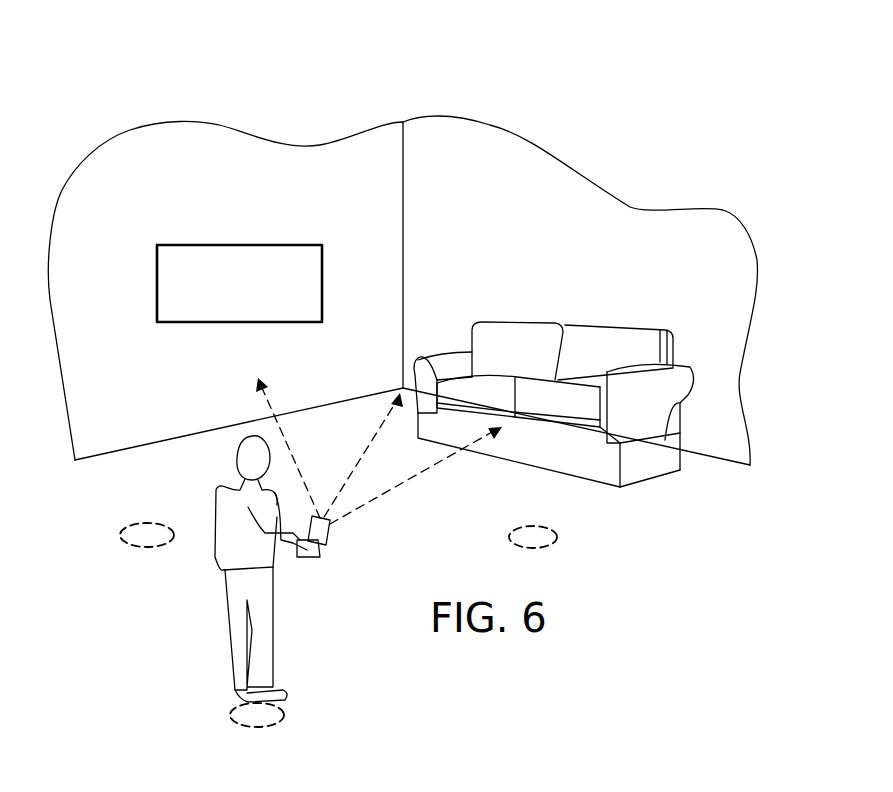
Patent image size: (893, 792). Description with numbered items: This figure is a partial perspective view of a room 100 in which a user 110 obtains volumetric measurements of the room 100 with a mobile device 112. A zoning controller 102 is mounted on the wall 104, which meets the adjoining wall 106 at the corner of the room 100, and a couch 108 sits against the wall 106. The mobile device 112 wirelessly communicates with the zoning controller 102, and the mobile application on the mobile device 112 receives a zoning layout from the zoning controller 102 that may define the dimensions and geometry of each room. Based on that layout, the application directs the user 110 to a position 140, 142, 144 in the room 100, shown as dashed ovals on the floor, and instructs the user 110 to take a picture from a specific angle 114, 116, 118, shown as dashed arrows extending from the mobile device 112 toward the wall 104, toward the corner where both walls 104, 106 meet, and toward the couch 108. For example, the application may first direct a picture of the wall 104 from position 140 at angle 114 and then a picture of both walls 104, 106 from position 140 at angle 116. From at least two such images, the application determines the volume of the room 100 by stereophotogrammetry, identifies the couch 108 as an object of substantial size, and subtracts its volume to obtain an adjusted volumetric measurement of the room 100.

The room 100 is at (250, 68).
The zoning controller 102 is at (240, 245).
The wall 104 is at (340, 185).
The wall 106 is at (550, 200).
The couch 108 is at (525, 320).
The user 110 is at (240, 463).
The mobile device 112 is at (323, 542).
The angle 114 is at (268, 400).
The angle 116 is at (373, 438).
The angle 118 is at (407, 478).
The position 140 is at (210, 705).
The position 142 is at (153, 552).
The position 144 is at (562, 542).